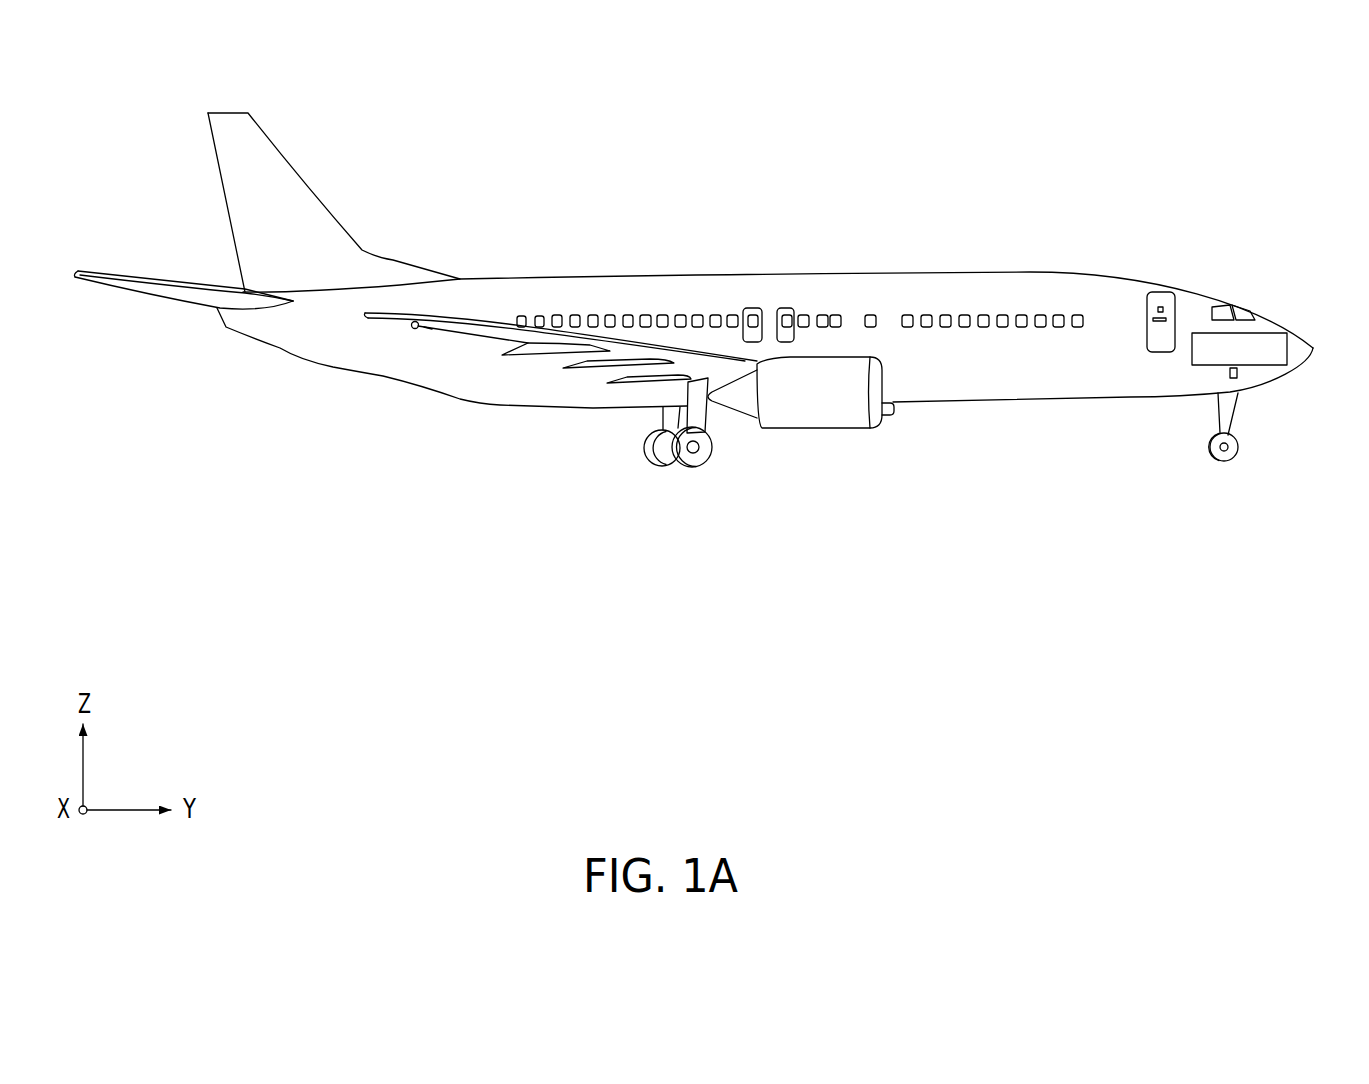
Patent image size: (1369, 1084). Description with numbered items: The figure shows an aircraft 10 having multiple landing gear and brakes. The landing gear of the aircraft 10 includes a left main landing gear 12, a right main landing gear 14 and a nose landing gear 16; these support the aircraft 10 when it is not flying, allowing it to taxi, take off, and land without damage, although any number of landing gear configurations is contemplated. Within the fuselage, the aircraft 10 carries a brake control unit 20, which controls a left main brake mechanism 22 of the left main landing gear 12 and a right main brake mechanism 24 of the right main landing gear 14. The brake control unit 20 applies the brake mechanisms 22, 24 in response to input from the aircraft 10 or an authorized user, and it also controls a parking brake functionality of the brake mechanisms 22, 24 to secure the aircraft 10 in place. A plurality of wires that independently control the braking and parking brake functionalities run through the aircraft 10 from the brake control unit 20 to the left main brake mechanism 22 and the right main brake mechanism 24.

The aircraft 10 is at (877, 173).
The left main landing gear 12 is at (657, 467).
The right main landing gear 14 is at (721, 495).
The nose landing gear 16 is at (1254, 433).
The brake control unit 20 is at (1284, 338).
The left main brake mechanism 22 is at (660, 455).
The right main brake mechanism 24 is at (691, 453).